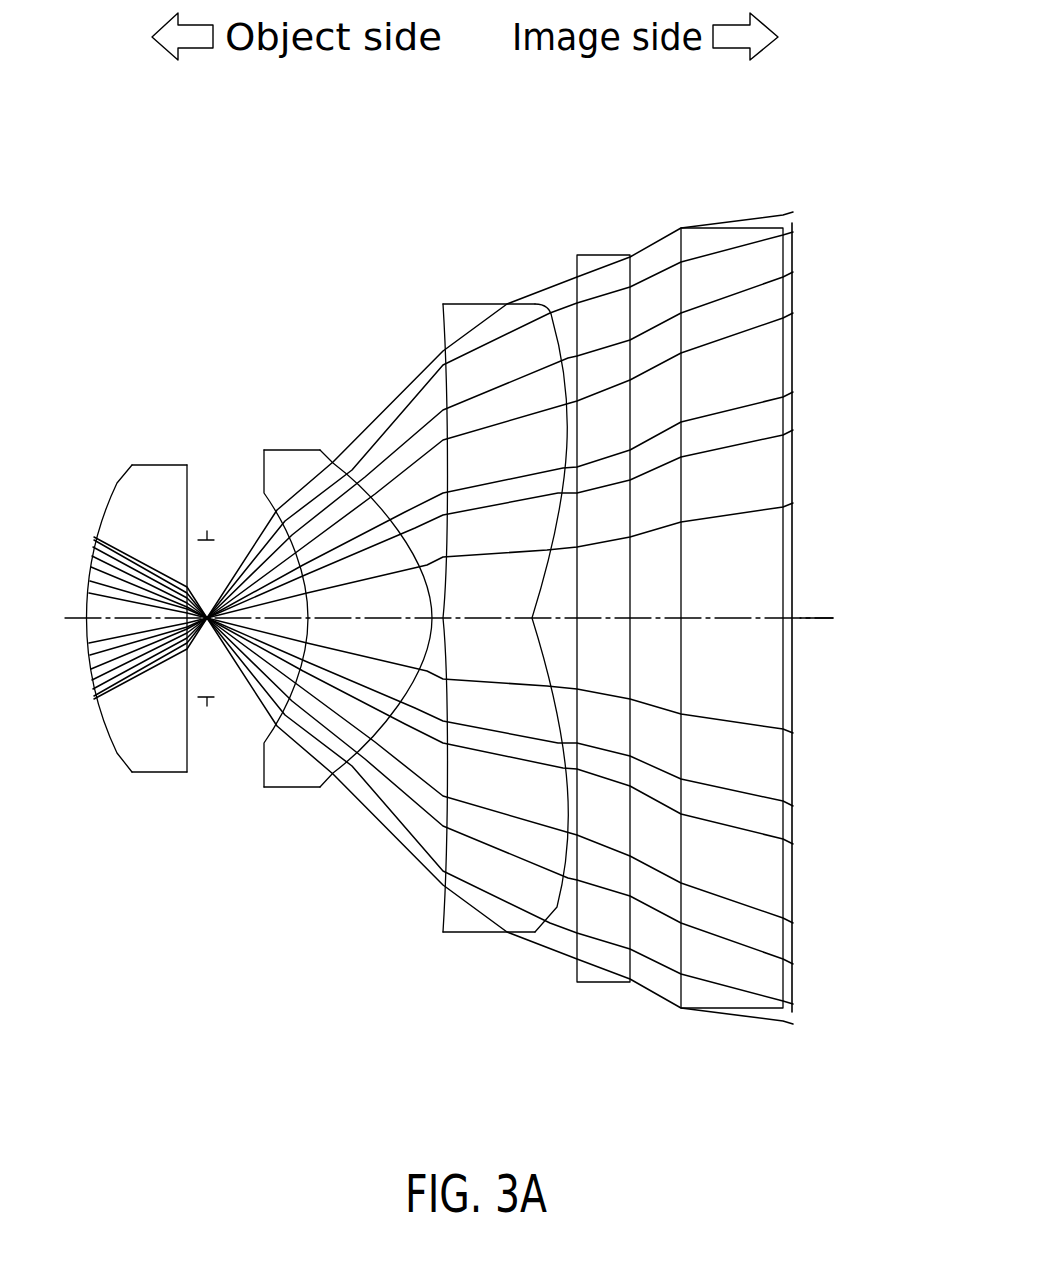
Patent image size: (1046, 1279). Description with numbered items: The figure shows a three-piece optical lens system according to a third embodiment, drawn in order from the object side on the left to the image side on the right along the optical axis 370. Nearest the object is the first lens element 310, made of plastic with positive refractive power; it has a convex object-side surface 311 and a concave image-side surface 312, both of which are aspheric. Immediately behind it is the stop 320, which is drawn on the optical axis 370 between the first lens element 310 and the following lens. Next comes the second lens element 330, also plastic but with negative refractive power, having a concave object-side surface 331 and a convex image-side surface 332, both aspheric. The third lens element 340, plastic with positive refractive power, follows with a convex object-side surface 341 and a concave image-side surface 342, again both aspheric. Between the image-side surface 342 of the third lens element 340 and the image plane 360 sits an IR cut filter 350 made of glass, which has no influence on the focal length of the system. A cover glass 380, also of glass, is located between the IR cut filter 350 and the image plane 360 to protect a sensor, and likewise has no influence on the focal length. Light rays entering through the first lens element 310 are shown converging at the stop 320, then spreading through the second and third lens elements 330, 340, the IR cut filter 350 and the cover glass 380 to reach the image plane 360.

The first lens element 310 is at (145, 650).
The object-side surface 311 is at (119, 753).
The image-side surface 312 is at (187, 753).
The stop 320 is at (207, 522).
The second lens element 330 is at (333, 642).
The object-side surface 331 is at (273, 733).
The image-side surface 332 is at (380, 733).
The third lens element 340 is at (477, 636).
The object-side surface 341 is at (443, 763).
The image-side surface 342 is at (563, 907).
The IR cut filter 350 is at (599, 248).
The cover glass 380 is at (700, 221).
The image plane 360 is at (788, 254).
The optical axis 370 is at (823, 618).